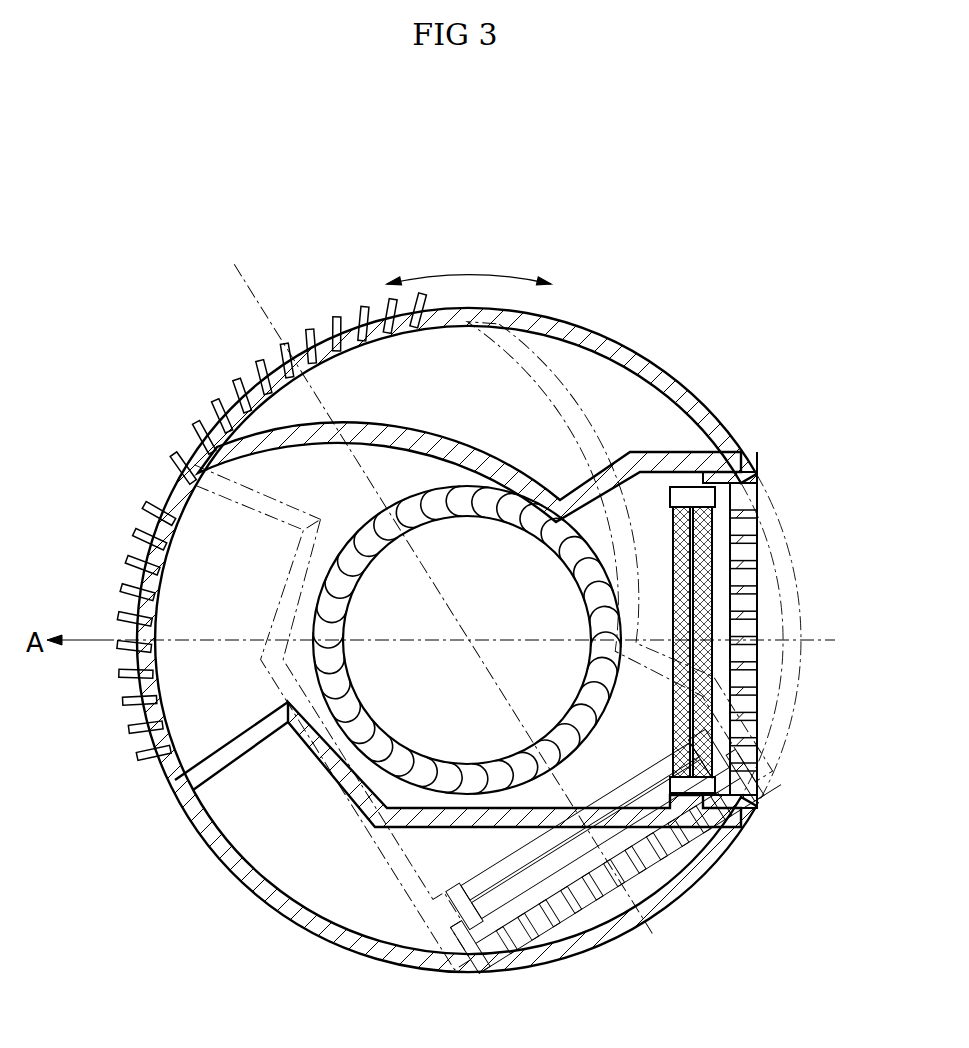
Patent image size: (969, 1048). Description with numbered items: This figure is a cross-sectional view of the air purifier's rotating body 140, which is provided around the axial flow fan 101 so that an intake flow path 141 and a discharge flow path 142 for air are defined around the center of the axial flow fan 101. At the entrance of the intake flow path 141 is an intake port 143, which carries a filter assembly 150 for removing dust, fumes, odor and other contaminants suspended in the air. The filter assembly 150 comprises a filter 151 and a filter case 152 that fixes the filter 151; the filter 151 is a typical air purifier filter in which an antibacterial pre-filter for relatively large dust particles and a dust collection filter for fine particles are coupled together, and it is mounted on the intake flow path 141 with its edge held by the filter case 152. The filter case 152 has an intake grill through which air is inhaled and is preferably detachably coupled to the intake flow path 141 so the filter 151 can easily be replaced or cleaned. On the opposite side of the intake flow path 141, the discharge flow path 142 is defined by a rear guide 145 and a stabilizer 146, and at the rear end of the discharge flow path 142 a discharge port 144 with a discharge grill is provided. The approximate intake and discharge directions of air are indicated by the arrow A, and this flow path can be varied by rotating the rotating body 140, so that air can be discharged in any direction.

The axial flow fan 101 is at (370, 723).
The rotating body 140 is at (641, 343).
The intake flow path 141 is at (663, 732).
The discharge flow path 142 is at (245, 568).
The intake port 143 is at (722, 662).
The discharge port 144 is at (150, 567).
The rear guide 145 is at (432, 437).
The stabilizer 146 is at (232, 752).
The filter assembly 150 is at (779, 630).
The filter 151 is at (710, 549).
The filter case 152 is at (753, 480).